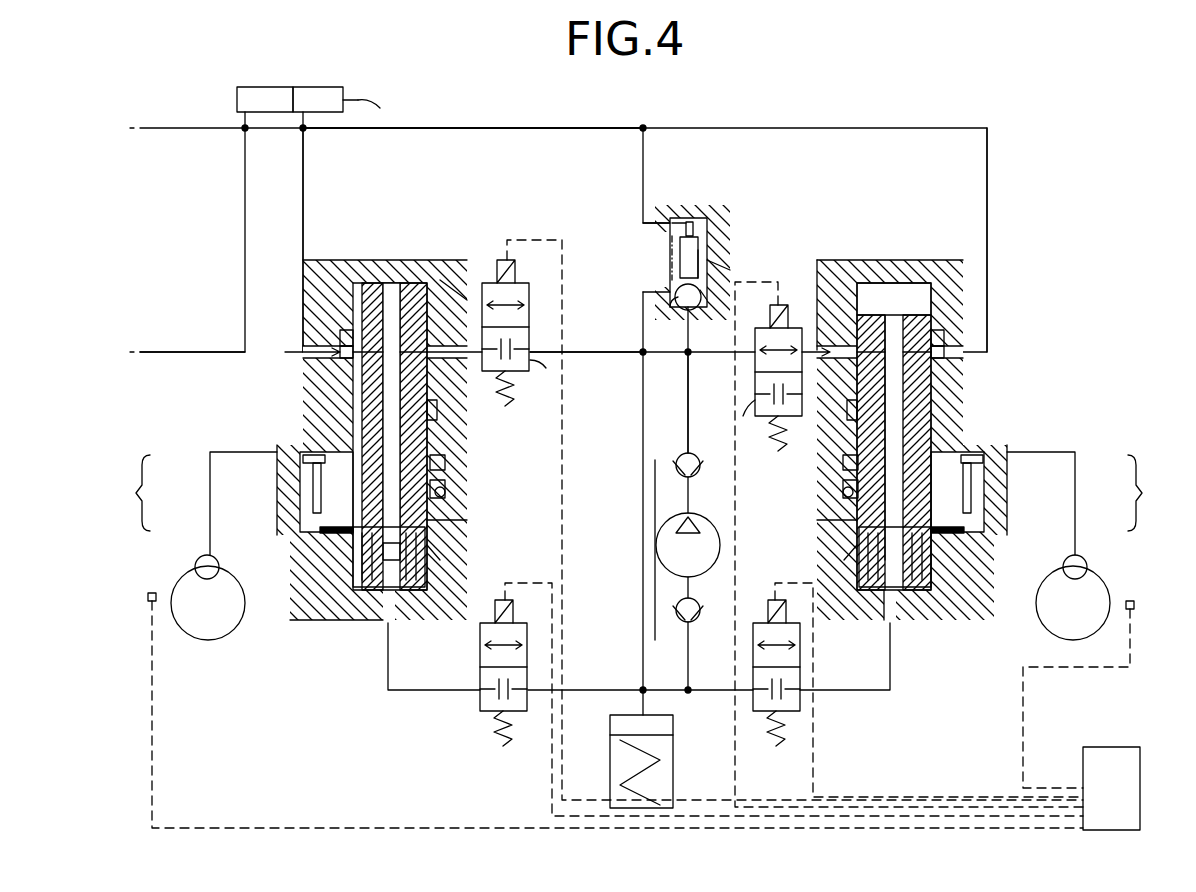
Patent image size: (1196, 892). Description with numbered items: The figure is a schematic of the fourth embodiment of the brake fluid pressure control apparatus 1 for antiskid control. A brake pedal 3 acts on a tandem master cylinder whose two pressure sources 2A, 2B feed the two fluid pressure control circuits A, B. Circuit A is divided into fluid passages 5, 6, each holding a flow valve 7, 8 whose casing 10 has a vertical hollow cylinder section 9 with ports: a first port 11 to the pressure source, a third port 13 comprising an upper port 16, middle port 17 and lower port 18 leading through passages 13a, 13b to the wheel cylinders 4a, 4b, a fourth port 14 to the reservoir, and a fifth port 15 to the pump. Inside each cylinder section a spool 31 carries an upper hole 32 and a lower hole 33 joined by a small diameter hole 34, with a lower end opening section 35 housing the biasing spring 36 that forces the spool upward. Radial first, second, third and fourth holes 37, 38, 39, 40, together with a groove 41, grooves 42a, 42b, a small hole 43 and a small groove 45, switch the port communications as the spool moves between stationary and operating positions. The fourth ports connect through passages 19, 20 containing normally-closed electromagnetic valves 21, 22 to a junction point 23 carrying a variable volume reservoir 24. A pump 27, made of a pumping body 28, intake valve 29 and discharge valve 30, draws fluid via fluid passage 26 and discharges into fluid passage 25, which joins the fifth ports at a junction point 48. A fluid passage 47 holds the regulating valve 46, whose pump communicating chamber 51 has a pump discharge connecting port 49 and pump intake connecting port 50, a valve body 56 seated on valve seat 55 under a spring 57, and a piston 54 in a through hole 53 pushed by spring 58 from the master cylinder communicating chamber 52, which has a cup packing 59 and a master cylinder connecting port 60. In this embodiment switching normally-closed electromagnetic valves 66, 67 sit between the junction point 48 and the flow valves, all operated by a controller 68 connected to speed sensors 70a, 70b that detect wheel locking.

The fluid pressure control apparatus 1 is at (1040, 166).
The pressure source 2A is at (318, 87).
The pressure source 2B is at (270, 87).
The brake pedal 3 is at (394, 111).
The fluid pressure control circuit A is at (445, 109).
The fluid pressure control circuit B is at (201, 103).
The fluid passage 5 is at (304, 187).
The fluid passage 6 is at (397, 132).
The flow valve 7 is at (456, 268).
The flow valve 8 is at (840, 233).
The hollow cylinder section 9 is at (350, 294).
The casing 10 is at (347, 274).
The first port 11 is at (1002, 302).
The third port 13 is at (646, 493).
The passage 13a is at (260, 452).
The passage 13b is at (1025, 444).
The fourth port 14 is at (890, 602).
The fifth port 15 is at (770, 352).
The upper port 16 is at (304, 465).
The middle port 17 is at (309, 500).
The lower port 18 is at (319, 530).
The passage 19 is at (424, 690).
The passage 20 is at (865, 690).
The normally-closed electromagnetic valve 21 is at (492, 600).
The normally-closed electromagnetic valve 22 is at (759, 620).
The junction point 23 is at (641, 690).
The variable volume reservoir 24 is at (673, 742).
The fluid passage 25 is at (604, 354).
The fluid passage 26 is at (688, 441).
The pump 27 is at (608, 480).
The pumping body 28 is at (656, 550).
The intake valve 29 is at (677, 602).
The discharge valve 30 is at (674, 476).
The cylindrical spool 31 is at (414, 285).
The upper hole 32 is at (384, 284).
The lower hole 33 is at (877, 590).
The small diameter hole 34 is at (438, 410).
The lower end opening section 35 is at (353, 562).
The biasing spring 36 is at (440, 538).
The first hole 37 is at (348, 348).
The second hole 38 is at (335, 450).
The third hole 39 is at (448, 490).
The fourth hole 40 is at (450, 302).
The groove 41 is at (340, 360).
The groove 42a is at (446, 465).
The groove 42b is at (446, 492).
The small hole 43 is at (436, 518).
The small groove 45 is at (348, 333).
The regulating valve 46 is at (711, 186).
The fluid passage 47 is at (638, 180).
The junction point 48 is at (690, 360).
The pump discharge connecting port 49 is at (643, 344).
The pump intake connecting port 50 is at (664, 295).
The pump communicating chamber 51 is at (703, 294).
The master cylinder communicating chamber 52 is at (701, 228).
The through hole 53 is at (706, 246).
The piston 54 is at (658, 236).
The valve seat 55 is at (673, 303).
The valve body 56 is at (708, 269).
The spring 57 is at (663, 281).
The spring 58 is at (688, 222).
The cup packing 59 is at (704, 288).
The master cylinder connecting port 60 is at (669, 222).
The switching normally-closed electromagnetic valve 66 is at (539, 360).
The switching normally-closed electromagnetic valve 67 is at (776, 415).
The controller 68 is at (1110, 747).
The speed sensor 70a is at (157, 607).
The speed sensor 70b is at (1135, 608).
The wheel cylinder 4a is at (196, 566).
The wheel cylinder 4b is at (1076, 566).